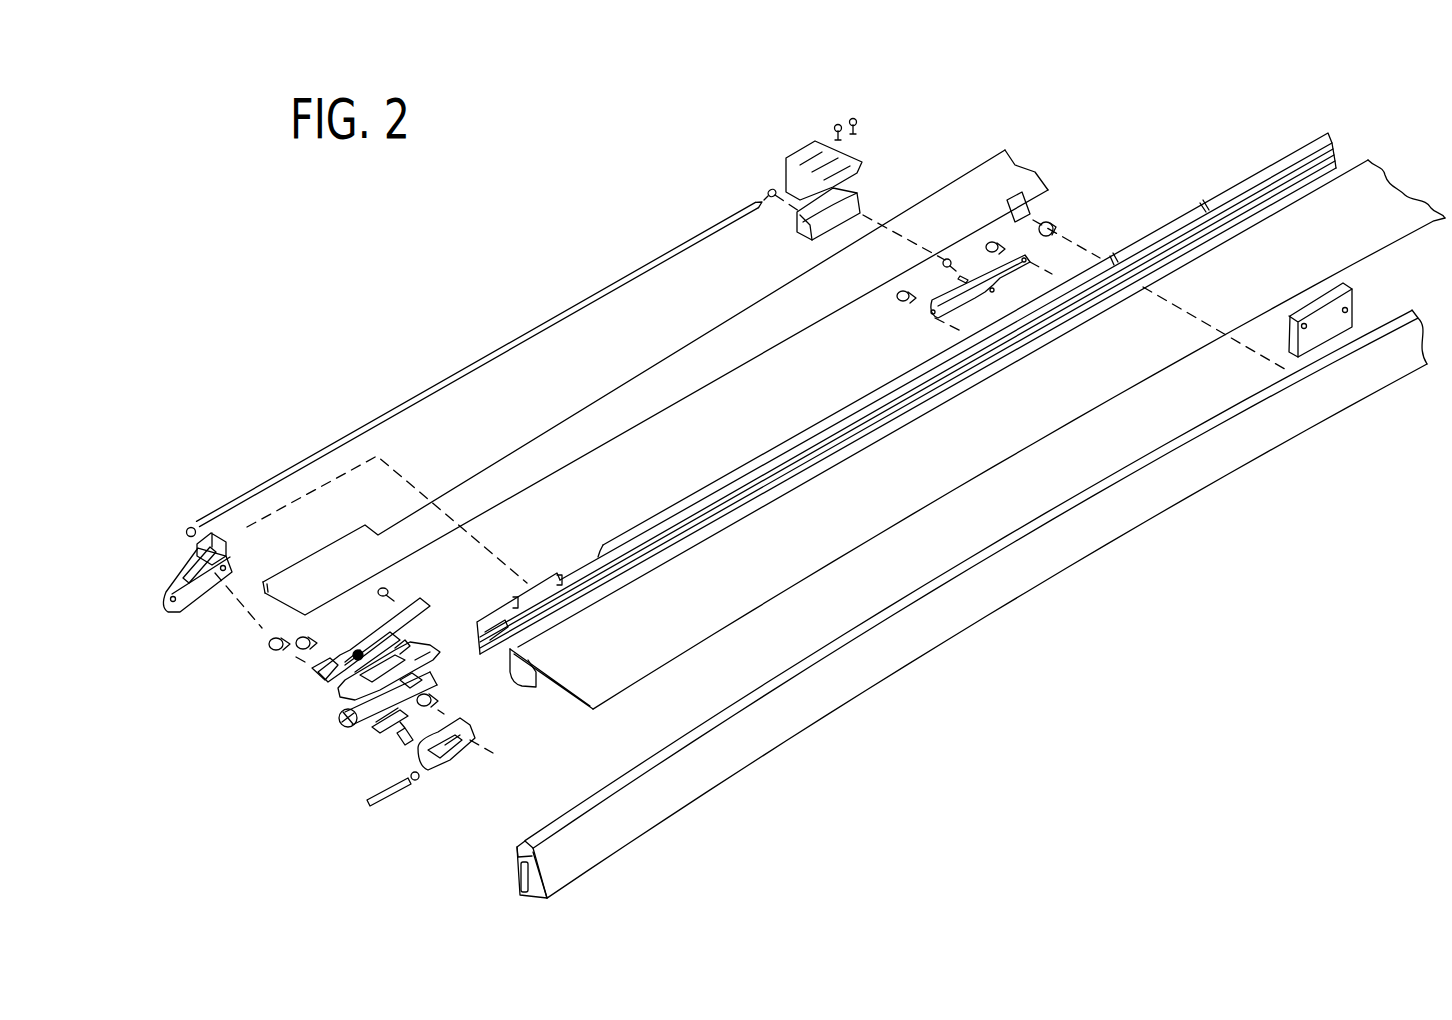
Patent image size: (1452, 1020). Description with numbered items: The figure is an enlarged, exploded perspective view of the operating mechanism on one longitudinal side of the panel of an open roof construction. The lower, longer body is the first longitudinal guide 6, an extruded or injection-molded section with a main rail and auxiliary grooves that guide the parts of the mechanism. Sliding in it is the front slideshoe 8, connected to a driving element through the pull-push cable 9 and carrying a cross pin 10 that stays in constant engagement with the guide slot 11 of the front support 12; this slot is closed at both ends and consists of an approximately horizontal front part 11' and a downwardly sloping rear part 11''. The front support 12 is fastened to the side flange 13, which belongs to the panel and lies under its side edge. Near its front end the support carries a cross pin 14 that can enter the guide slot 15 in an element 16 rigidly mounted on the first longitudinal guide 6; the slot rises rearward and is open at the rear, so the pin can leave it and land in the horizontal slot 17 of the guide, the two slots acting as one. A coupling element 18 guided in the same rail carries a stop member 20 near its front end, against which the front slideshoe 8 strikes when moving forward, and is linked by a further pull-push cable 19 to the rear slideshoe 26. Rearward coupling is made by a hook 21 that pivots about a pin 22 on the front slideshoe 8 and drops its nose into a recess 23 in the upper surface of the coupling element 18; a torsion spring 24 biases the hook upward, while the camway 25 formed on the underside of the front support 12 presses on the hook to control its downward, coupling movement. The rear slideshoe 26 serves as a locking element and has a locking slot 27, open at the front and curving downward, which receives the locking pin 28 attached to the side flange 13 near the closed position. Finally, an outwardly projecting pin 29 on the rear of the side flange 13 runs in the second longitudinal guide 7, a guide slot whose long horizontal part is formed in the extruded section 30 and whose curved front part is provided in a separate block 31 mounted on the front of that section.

The first longitudinal guide 6 is at (1302, 148).
The second longitudinal guide 7 is at (518, 850).
The front slideshoe 8 is at (453, 752).
The pull-push cable 9 is at (387, 797).
The cross pin 10 is at (440, 712).
The guide slot 11 is at (355, 674).
The front part of guide slot 11' is at (349, 582).
The rear part of guide slot 11'' is at (385, 564).
The front support 12 is at (315, 670).
The side flange 13 is at (577, 413).
The cross pin 14 is at (293, 658).
The guide slot 15 is at (230, 547).
The element 16 is at (213, 533).
The horizontal slot 17 is at (583, 553).
The coupling element 18 is at (425, 655).
The pull-push cable 19 is at (648, 258).
The stop member 20 is at (338, 717).
The hook 21 is at (467, 747).
The pin 22 is at (400, 737).
The recess 23 is at (410, 684).
The torsion spring 24 is at (390, 723).
The camway 25 is at (355, 660).
The rear slideshoe 26 is at (818, 223).
The locking slot 27 is at (863, 190).
The locking pin 28 is at (965, 275).
The projecting pin 29 is at (1053, 227).
The extruded section 30 is at (1362, 357).
The block 31 is at (1320, 323).